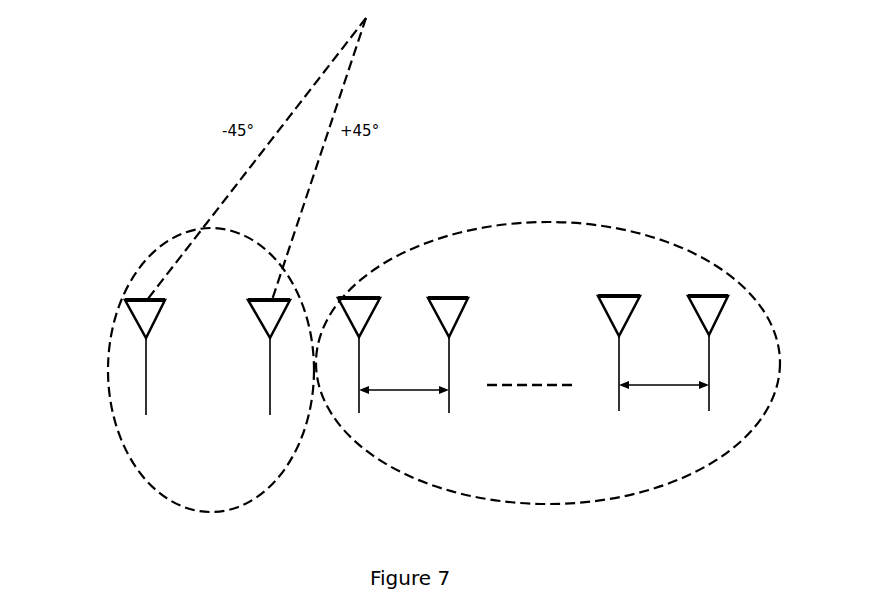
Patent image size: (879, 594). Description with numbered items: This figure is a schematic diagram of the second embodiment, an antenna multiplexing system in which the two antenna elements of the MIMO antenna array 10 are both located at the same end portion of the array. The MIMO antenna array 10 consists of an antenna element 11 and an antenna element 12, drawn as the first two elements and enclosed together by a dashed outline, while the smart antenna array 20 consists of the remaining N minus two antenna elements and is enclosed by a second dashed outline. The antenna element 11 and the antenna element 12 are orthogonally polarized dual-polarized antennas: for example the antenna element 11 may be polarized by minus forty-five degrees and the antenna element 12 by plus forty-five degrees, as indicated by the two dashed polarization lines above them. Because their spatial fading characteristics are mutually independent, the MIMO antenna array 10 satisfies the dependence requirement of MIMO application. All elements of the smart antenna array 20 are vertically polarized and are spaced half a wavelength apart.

The MIMO antenna array 10 is at (181, 381).
The antenna element 11 is at (100, 357).
The antenna element 12 is at (226, 357).
The smart antenna array 20 is at (548, 377).